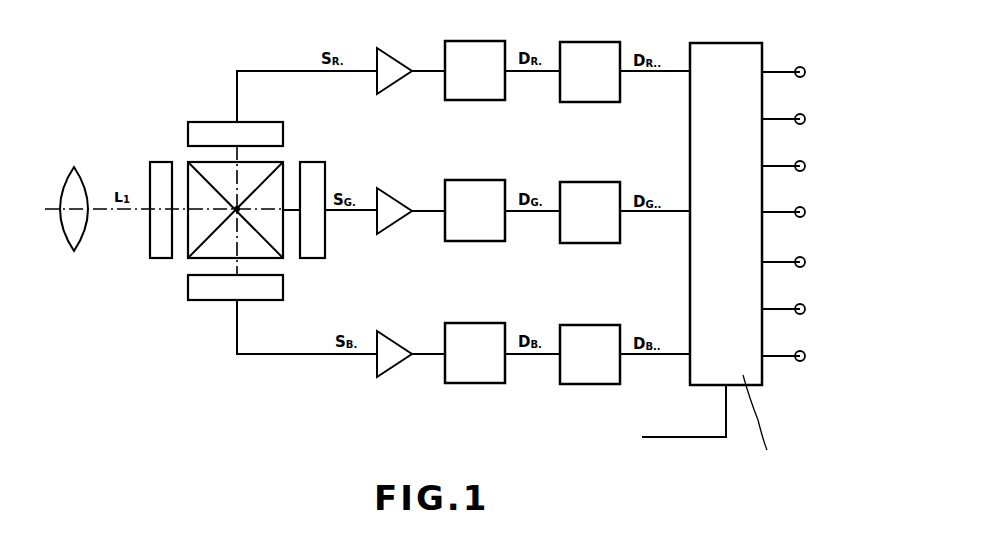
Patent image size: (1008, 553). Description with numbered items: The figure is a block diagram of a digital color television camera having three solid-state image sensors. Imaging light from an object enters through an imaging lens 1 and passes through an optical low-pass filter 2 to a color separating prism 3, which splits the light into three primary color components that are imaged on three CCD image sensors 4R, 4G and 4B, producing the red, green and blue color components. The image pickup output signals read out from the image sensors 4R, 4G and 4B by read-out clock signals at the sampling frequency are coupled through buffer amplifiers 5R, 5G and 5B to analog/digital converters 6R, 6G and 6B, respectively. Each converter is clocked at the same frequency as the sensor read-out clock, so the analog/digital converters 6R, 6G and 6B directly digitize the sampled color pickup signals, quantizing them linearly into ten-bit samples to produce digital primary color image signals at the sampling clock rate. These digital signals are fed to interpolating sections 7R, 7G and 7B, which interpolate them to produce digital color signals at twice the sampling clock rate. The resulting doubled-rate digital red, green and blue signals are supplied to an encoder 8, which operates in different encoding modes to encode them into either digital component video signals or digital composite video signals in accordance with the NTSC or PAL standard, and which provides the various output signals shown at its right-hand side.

The imaging lens 1 is at (78, 178).
The optical low-pass filter 2 is at (150, 250).
The color separating prism 3 is at (168, 274).
The CCD image sensor 4R is at (204, 122).
The CCD image sensor 4G is at (311, 162).
The CCD image sensor 4B is at (200, 300).
The buffer amplifier 5R is at (401, 35).
The buffer amplifier 5G is at (396, 189).
The buffer amplifier 5B is at (396, 331).
The analog/digital converter 6R is at (488, 41).
The analog/digital converter 6G is at (467, 180).
The analog/digital converter 6B is at (478, 323).
The interpolating section 7R is at (588, 42).
The interpolating section 7G is at (586, 182).
The interpolating section 7B is at (586, 325).
The encoder 8 is at (712, 43).